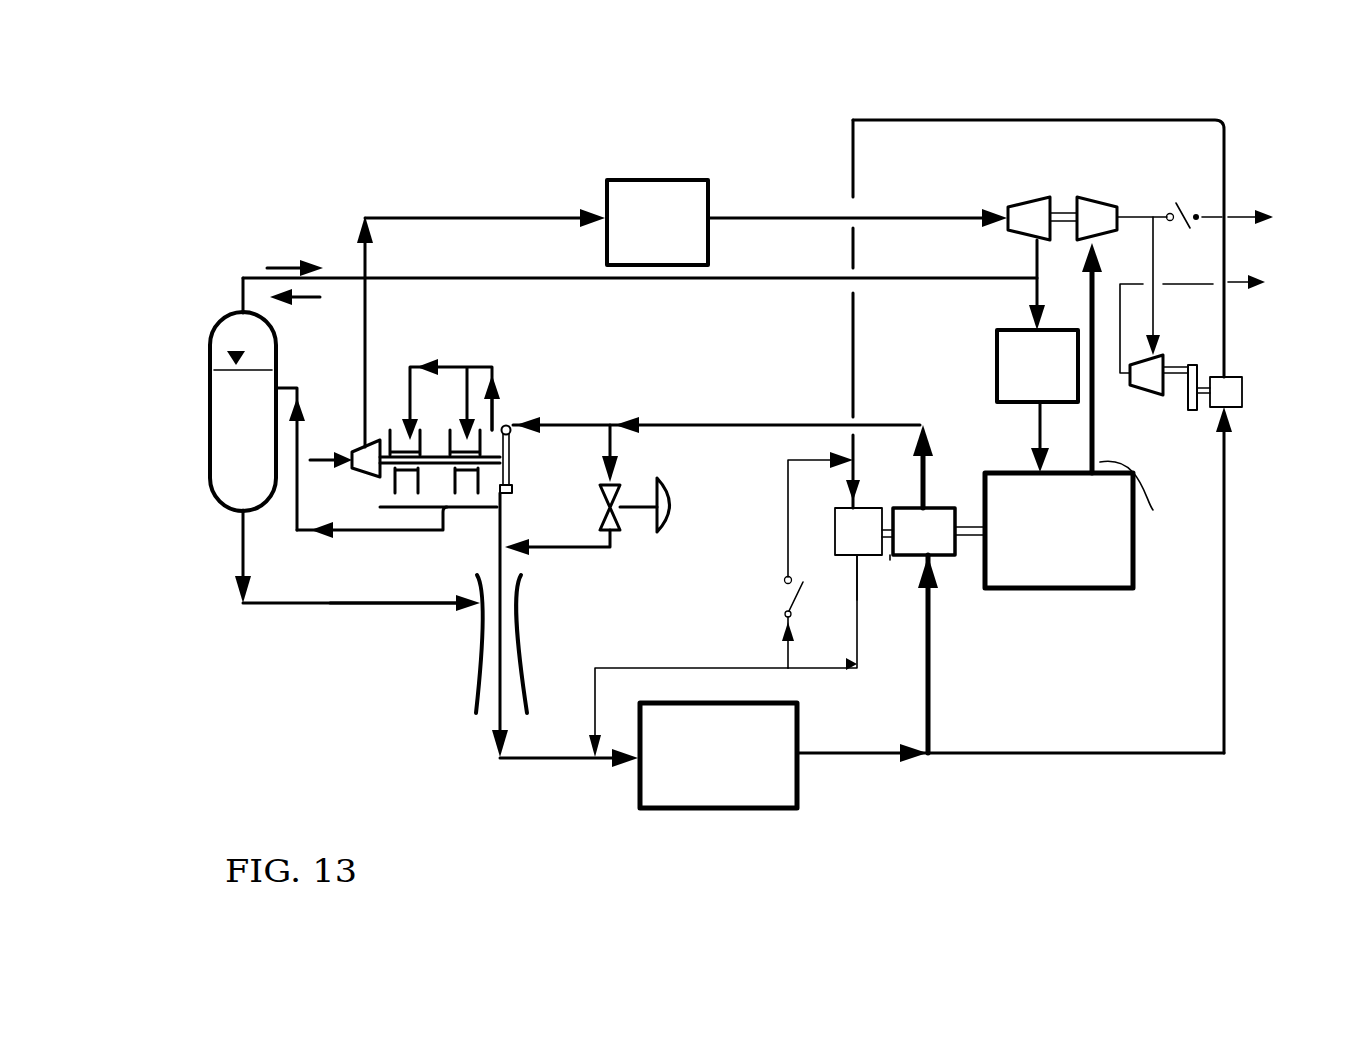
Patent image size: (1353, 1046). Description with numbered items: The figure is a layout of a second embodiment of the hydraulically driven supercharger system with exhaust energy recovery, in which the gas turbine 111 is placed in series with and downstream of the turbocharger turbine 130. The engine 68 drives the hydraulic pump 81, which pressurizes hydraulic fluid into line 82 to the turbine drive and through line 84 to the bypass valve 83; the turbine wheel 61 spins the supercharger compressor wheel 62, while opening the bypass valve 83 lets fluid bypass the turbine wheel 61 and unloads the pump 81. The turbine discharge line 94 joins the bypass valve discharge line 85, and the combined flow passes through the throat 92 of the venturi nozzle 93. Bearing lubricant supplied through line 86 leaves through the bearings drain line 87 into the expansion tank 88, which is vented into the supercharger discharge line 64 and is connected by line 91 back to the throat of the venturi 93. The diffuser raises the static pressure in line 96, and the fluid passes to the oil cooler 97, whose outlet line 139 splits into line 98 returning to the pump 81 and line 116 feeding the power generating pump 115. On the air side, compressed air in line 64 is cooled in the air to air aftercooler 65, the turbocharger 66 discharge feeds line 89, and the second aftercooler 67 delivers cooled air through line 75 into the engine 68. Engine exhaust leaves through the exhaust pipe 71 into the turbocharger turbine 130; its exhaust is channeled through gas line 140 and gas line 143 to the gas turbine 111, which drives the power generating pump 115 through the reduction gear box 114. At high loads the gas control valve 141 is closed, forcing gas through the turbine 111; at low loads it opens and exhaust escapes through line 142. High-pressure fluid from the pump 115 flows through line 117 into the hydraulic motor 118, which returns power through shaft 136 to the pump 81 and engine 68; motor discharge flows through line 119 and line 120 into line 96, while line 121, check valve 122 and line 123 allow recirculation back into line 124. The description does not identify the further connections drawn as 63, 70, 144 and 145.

The turbine wheel 61 is at (508, 420).
The supercharger compressor wheel 62 is at (362, 445).
The return conduit 63 is at (303, 495).
The supercharger discharge line 64 is at (372, 343).
The air to air aftercooler 65 is at (708, 190).
The turbocharger 66 is at (1053, 207).
The second aftercooler 67 is at (995, 360).
The engine 68 is at (1023, 588).
The conduit 70 is at (927, 213).
The exhaust pipe 71 is at (1083, 313).
The line 75 is at (1037, 430).
The hydraulic pump 81 is at (938, 523).
The line 82 is at (795, 423).
The bypass valve 83 is at (623, 530).
The line 84 is at (612, 447).
The bypass valve discharge line 85 is at (585, 550).
The line 86 is at (450, 362).
The bearings drain line 87 is at (293, 602).
The expansion tank 88 is at (208, 478).
The line 89 is at (242, 277).
The line 91 is at (372, 605).
The throat 92 is at (518, 603).
The venturi nozzle 93 is at (477, 686).
The turbine discharge line 94 is at (495, 397).
The line 96 is at (578, 762).
The oil cooler 97 is at (800, 785).
The line 98 is at (932, 660).
The gas turbine 111 is at (1140, 395).
The reduction gear box 114 is at (1192, 410).
The power generating pump 115 is at (1242, 383).
The line 116 is at (1228, 593).
The line 117 is at (975, 118).
The hydraulic motor 118 is at (872, 555).
The line 119 is at (813, 673).
The line 120 is at (620, 668).
The line 121 is at (785, 649).
The check valve 122 is at (780, 597).
The line 123 is at (785, 487).
The line 124 is at (860, 492).
The turbocharger turbine 130 is at (1103, 203).
The shaft 136 is at (890, 558).
The line 139 is at (862, 757).
The gas line 140 is at (1130, 213).
The gas control valve 141 is at (1198, 195).
The line 142 is at (1257, 223).
The gas line 143 is at (1153, 257).
The output 144 is at (1238, 290).
The line 145 is at (1144, 503).